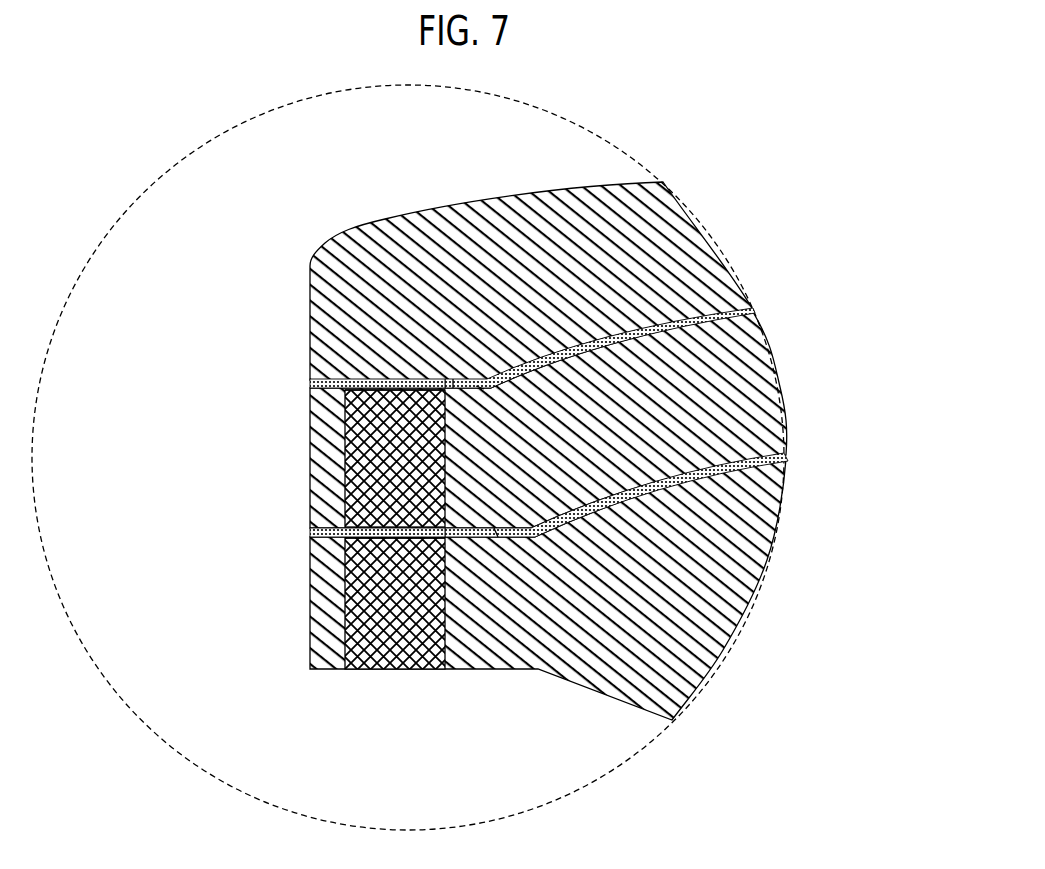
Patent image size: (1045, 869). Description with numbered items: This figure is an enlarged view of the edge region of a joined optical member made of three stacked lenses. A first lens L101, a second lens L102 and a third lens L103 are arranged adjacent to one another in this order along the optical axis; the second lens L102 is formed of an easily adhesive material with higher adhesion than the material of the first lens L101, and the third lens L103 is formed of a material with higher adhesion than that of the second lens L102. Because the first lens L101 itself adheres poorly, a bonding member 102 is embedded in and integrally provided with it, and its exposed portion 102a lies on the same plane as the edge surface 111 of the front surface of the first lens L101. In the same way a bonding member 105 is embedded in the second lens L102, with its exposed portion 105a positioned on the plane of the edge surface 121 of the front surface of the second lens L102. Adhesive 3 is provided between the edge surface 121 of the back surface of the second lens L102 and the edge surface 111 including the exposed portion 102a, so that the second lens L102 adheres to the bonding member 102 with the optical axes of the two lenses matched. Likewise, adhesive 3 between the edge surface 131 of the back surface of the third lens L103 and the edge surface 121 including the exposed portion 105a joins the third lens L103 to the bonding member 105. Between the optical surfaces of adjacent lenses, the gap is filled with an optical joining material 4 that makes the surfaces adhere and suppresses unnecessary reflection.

The first lens L101 is at (773, 553).
The second lens L102 is at (778, 387).
The third lens L103 is at (708, 224).
The optical joining material 4 is at (753, 312).
The adhesive 3 is at (310, 385).
The bonding member 105 is at (345, 438).
The exposed portion 105a is at (388, 380).
The bonding member 102 is at (345, 606).
The exposed portion 102a is at (345, 514).
The edge surface 121 is at (530, 728).
The edge surface 111 is at (496, 530).
The edge surface 131 is at (479, 388).